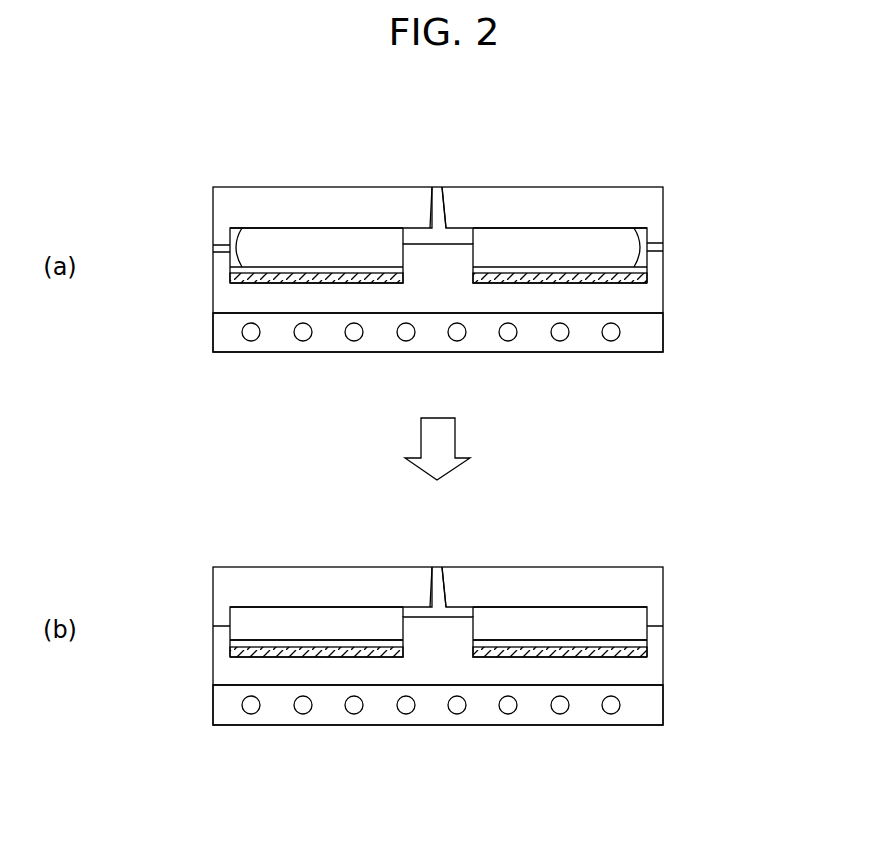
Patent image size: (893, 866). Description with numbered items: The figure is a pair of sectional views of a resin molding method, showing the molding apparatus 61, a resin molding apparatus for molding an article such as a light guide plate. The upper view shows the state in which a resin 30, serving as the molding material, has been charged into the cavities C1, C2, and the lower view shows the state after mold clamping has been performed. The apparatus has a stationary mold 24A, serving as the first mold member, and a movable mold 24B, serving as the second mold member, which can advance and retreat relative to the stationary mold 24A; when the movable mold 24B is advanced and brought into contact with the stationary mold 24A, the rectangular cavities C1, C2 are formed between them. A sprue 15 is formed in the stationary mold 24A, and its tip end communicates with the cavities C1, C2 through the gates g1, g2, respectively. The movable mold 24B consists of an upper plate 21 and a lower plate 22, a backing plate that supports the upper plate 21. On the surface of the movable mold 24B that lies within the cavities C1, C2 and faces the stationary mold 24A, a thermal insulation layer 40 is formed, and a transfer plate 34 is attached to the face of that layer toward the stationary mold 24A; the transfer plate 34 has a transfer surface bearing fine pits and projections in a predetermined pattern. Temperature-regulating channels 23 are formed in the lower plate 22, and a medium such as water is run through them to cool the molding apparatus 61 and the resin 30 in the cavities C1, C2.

The molding apparatus 61 is at (222, 186).
The stationary mold 24A is at (672, 227).
The movable mold 24B is at (758, 268).
The upper plate 21 is at (672, 297).
The lower plate 22 is at (672, 337).
The temperature-regulating channels 23 is at (250, 342).
The sprue 15 is at (438, 215).
The resin 30 is at (593, 243).
The transfer plate 34 is at (287, 265).
The thermal insulation layer 40 is at (378, 284).
The cavity C1 is at (239, 266).
The cavity C2 is at (638, 264).
The gate g1 is at (420, 238).
The gate g2 is at (458, 238).